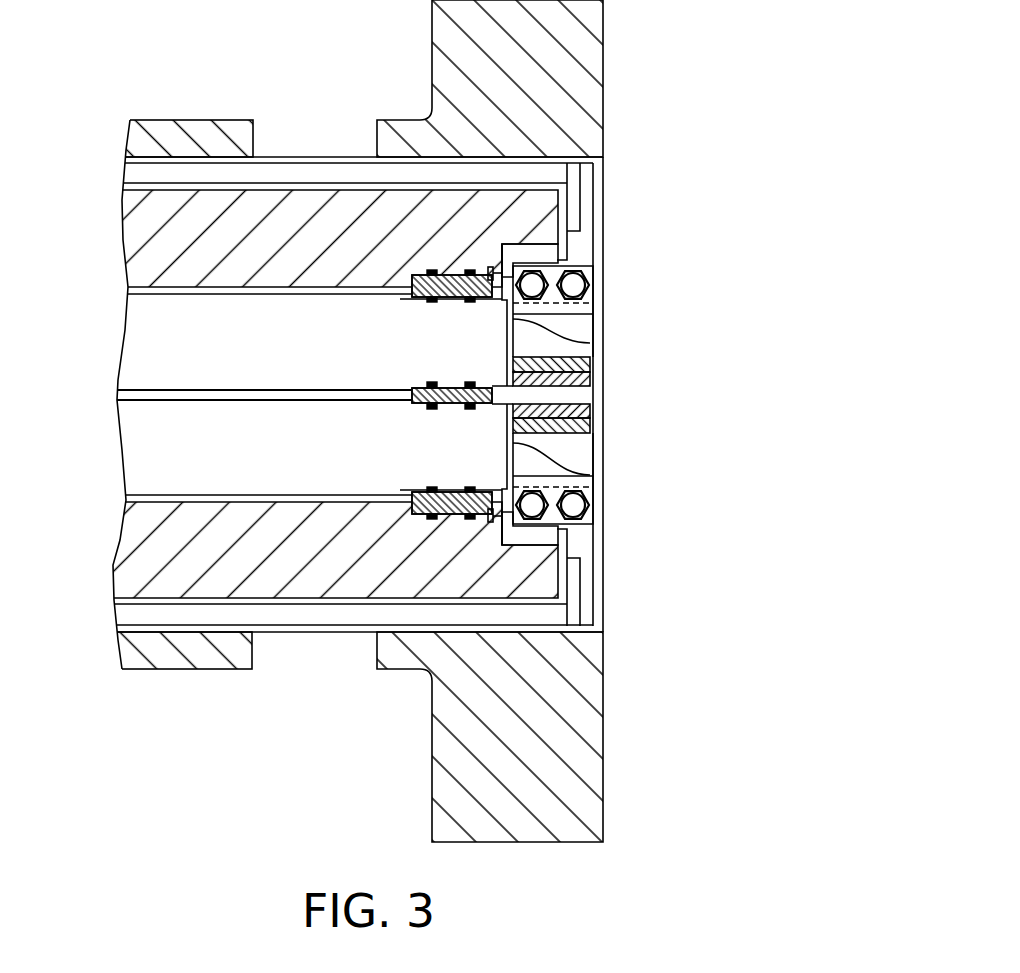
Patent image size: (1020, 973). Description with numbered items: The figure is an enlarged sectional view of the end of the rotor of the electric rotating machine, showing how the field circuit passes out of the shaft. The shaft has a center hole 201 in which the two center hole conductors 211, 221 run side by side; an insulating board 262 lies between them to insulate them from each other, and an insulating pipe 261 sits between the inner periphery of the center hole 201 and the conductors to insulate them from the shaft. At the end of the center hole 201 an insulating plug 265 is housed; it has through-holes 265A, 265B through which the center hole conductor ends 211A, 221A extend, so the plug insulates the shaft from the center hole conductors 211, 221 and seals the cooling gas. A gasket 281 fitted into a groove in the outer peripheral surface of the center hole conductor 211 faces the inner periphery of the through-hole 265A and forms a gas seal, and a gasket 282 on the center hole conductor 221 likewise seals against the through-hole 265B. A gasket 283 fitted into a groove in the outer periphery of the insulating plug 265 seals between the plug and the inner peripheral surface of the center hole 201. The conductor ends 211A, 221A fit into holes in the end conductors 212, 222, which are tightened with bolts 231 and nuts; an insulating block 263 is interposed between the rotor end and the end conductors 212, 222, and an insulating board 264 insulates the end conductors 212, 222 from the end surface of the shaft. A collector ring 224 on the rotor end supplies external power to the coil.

The center hole 201 is at (272, 289).
The center hole conductor 211 is at (150, 320).
The center hole conductor end 211A is at (577, 348).
The end conductor 212 is at (581, 241).
The center hole conductor 221 is at (150, 428).
The center hole conductor end 221A is at (577, 441).
The end conductor 222 is at (576, 546).
The collector ring 224 is at (189, 137).
The bolt 231 is at (578, 508).
The insulating pipe 261 is at (155, 500).
The insulating board 262 is at (155, 397).
The insulating block 263 is at (537, 251).
The insulating board 264 is at (574, 190).
The insulating plug 265 is at (457, 300).
The through-hole 265A is at (485, 303).
The through-hole 265B is at (480, 474).
The gasket 281 is at (433, 303).
The gasket 282 is at (433, 487).
The gasket 283 is at (447, 490).